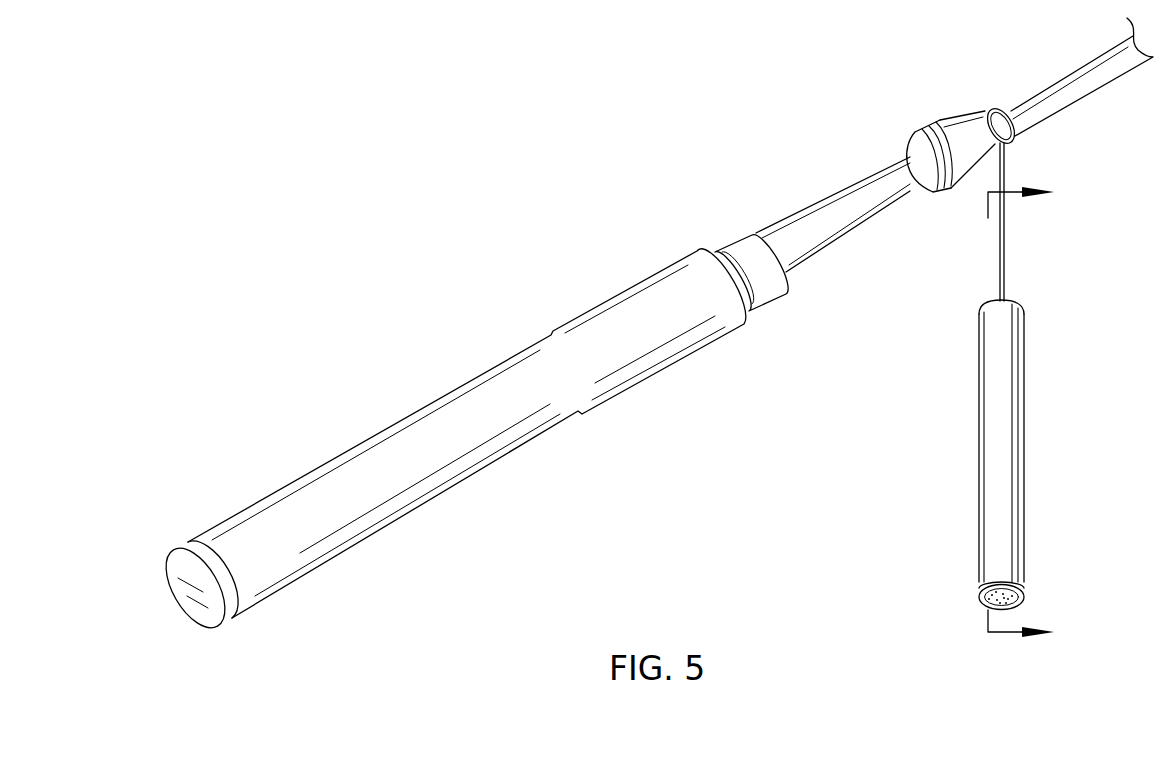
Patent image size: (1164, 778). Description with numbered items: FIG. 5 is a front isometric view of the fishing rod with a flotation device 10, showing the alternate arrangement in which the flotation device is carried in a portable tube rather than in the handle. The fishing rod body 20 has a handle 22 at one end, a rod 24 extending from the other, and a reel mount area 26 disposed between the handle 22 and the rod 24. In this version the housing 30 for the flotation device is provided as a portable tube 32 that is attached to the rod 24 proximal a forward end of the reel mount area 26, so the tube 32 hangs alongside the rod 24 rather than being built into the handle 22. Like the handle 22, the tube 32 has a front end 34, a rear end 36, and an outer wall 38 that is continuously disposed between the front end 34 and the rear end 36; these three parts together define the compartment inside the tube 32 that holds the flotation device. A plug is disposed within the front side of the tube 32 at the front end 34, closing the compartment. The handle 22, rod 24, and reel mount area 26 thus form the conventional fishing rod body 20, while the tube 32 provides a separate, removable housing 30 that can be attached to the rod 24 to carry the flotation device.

The fishing rod with a flotation device 10 is at (506, 186).
The fishing rod body 20 is at (820, 188).
The handle 22 is at (436, 404).
The rod 24 is at (1040, 93).
The reel mount area 26 is at (873, 187).
The housing 30 is at (1027, 299).
The portable tube 32 is at (1025, 414).
The front end 34 is at (1012, 580).
The rear end 36 is at (984, 303).
The outer wall 38 is at (1005, 447).